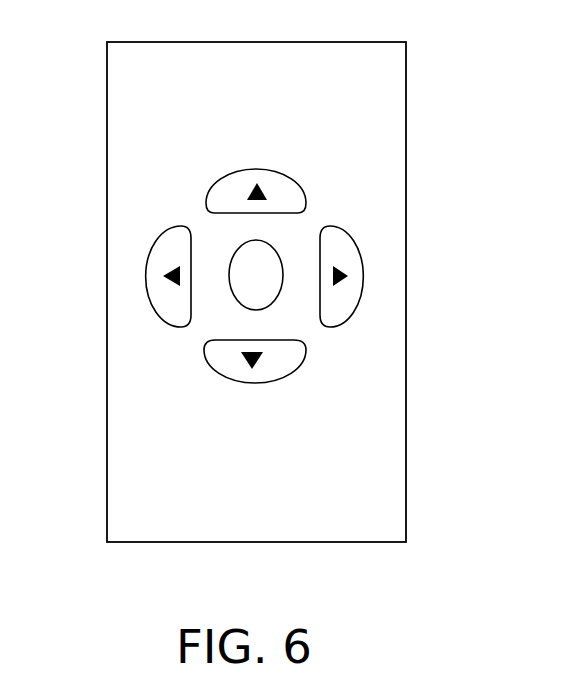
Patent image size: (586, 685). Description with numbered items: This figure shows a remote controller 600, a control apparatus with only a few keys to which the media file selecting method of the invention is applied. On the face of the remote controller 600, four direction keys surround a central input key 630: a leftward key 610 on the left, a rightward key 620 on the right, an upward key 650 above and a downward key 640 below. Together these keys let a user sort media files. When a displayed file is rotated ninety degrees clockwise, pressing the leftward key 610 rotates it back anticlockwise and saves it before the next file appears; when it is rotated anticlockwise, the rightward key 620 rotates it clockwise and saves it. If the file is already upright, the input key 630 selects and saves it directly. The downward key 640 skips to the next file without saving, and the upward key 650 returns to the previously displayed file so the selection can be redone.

The remote controller 600 is at (406, 67).
The leftward key 610 is at (157, 271).
The rightward key 620 is at (358, 272).
The input key 630 is at (274, 246).
The downward key 640 is at (290, 354).
The upward key 650 is at (218, 193).